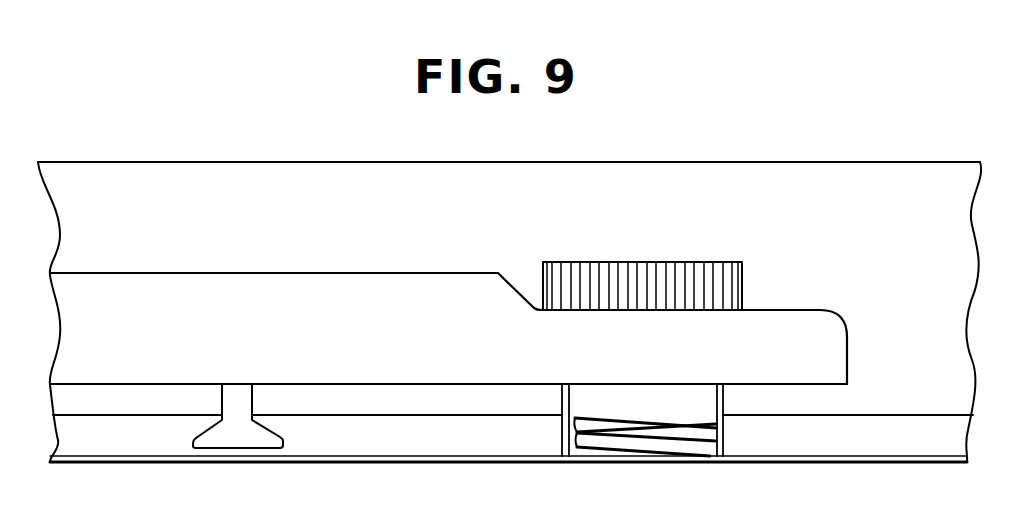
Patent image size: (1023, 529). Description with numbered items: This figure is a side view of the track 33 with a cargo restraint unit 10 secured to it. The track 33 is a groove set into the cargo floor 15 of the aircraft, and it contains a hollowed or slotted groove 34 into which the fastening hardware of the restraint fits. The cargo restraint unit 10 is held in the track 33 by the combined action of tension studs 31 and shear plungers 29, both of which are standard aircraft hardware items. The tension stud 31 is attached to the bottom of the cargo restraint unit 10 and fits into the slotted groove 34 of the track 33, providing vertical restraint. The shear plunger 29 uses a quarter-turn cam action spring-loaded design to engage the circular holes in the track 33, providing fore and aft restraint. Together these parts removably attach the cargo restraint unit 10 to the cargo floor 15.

The cargo floor 15 is at (805, 162).
The cargo restraint unit 10 is at (235, 273).
The track 33 is at (455, 237).
The shear plunger 29 is at (735, 262).
The tension stud 31 is at (243, 441).
The slotted groove 34 is at (422, 446).